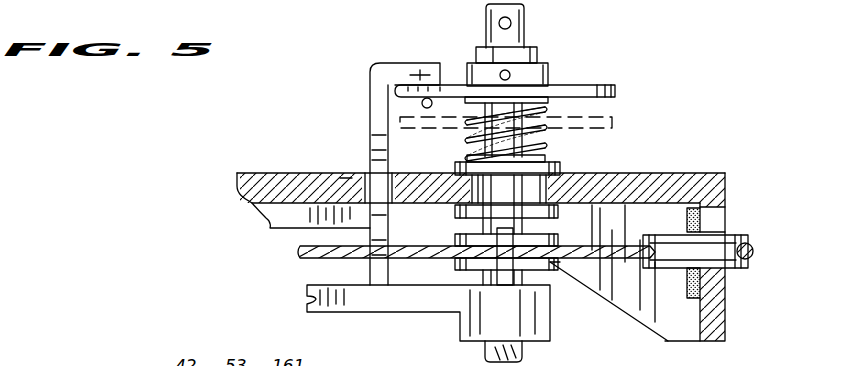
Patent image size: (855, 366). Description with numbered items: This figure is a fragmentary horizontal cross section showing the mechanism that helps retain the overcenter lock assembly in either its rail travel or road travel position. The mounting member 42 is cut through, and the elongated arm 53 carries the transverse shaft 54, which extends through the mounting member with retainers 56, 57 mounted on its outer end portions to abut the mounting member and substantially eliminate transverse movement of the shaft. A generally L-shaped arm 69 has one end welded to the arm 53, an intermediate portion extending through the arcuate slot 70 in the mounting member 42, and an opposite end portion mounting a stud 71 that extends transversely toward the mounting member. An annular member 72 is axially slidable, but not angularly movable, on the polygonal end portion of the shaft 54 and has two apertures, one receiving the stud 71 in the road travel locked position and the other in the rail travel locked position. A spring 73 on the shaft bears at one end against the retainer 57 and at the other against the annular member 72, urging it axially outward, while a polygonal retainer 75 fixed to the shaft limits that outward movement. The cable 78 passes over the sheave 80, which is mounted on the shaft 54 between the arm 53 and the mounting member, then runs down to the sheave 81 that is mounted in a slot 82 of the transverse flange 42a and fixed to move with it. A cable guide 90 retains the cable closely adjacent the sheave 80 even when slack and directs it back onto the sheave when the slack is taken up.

The mounting member 42 is at (270, 176).
The transverse flange 42a is at (722, 325).
The elongated arm 53 is at (310, 300).
The transverse shaft 54 is at (520, 47).
The retainer 56 is at (455, 212).
The retainer 57 is at (570, 170).
The L-shaped arm 69 is at (375, 117).
The arcuate slot 70 is at (347, 178).
The stud 71 is at (430, 100).
The annular member 72 is at (612, 93).
The spring 73 is at (465, 138).
The polygonal retainer 75 is at (538, 58).
The cable 78 is at (300, 247).
The sheave 80 is at (560, 263).
The sheave 81 is at (745, 266).
The slot 82 is at (722, 218).
The cable guide 90 is at (540, 277).